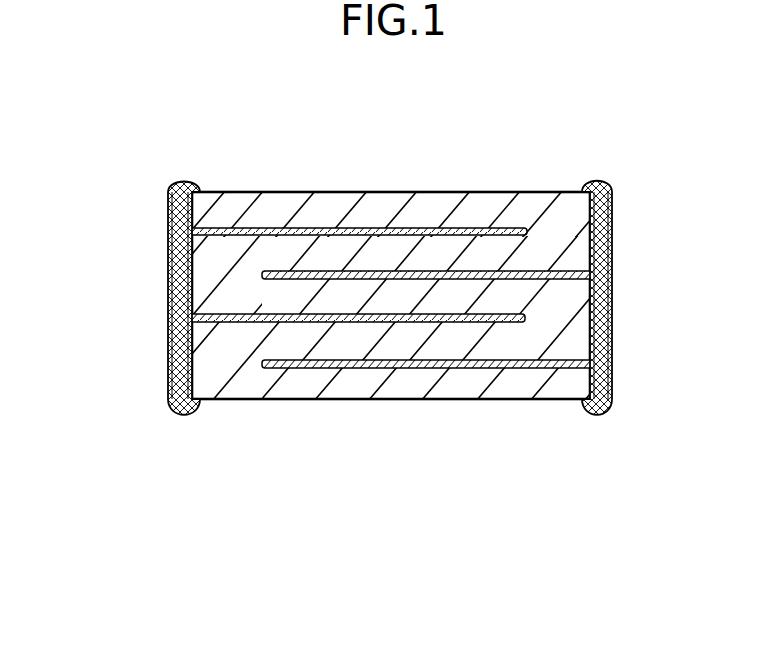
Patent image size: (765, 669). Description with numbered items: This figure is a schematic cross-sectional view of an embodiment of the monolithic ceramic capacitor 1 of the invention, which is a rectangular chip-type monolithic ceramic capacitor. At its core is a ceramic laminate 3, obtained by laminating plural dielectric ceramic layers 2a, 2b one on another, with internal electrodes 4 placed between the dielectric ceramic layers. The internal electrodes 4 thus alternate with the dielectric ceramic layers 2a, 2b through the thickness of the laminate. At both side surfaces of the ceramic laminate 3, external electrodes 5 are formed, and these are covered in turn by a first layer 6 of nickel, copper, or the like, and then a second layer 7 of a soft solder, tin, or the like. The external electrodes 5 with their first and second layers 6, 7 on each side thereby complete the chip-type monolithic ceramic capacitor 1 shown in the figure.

The monolithic ceramic capacitor 1 is at (170, 151).
The dielectric ceramic layer 2a is at (438, 192).
The dielectric ceramic layer 2b is at (517, 253).
The ceramic laminate 3 is at (323, 180).
The internal electrodes 4 is at (242, 232).
The external electrodes 5 is at (168, 223).
The first layer 6 is at (168, 293).
The second layer 7 is at (168, 356).